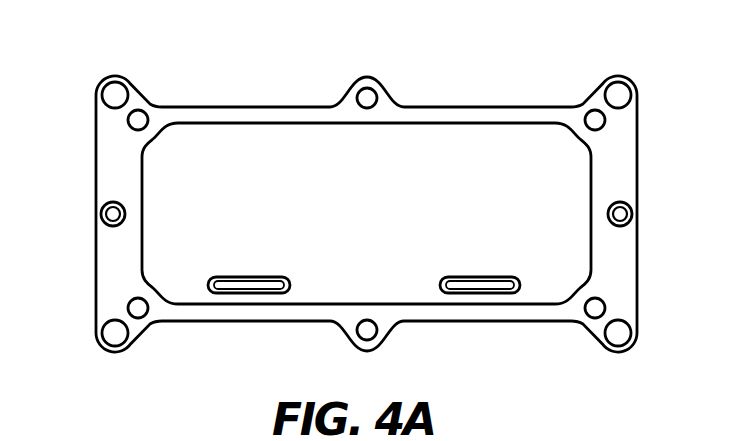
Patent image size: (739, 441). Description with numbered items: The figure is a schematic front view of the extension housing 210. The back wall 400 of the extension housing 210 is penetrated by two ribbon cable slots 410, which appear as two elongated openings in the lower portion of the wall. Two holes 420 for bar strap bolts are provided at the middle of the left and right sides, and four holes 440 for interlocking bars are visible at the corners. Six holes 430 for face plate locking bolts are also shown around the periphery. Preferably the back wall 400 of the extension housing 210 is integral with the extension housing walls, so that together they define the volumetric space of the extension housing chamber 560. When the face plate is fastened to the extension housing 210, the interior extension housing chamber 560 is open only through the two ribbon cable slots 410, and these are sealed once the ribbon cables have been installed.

The extension housing 210 is at (367, 195).
The back wall 400 is at (494, 168).
The ribbon cable slots 410 is at (247, 292).
The holes for bar strap bolts 420 is at (632, 212).
The holes for face plate locking bolts 430 is at (130, 122).
The holes for interlocking bars 440 is at (106, 95).
The extension housing chamber 560 is at (381, 213).